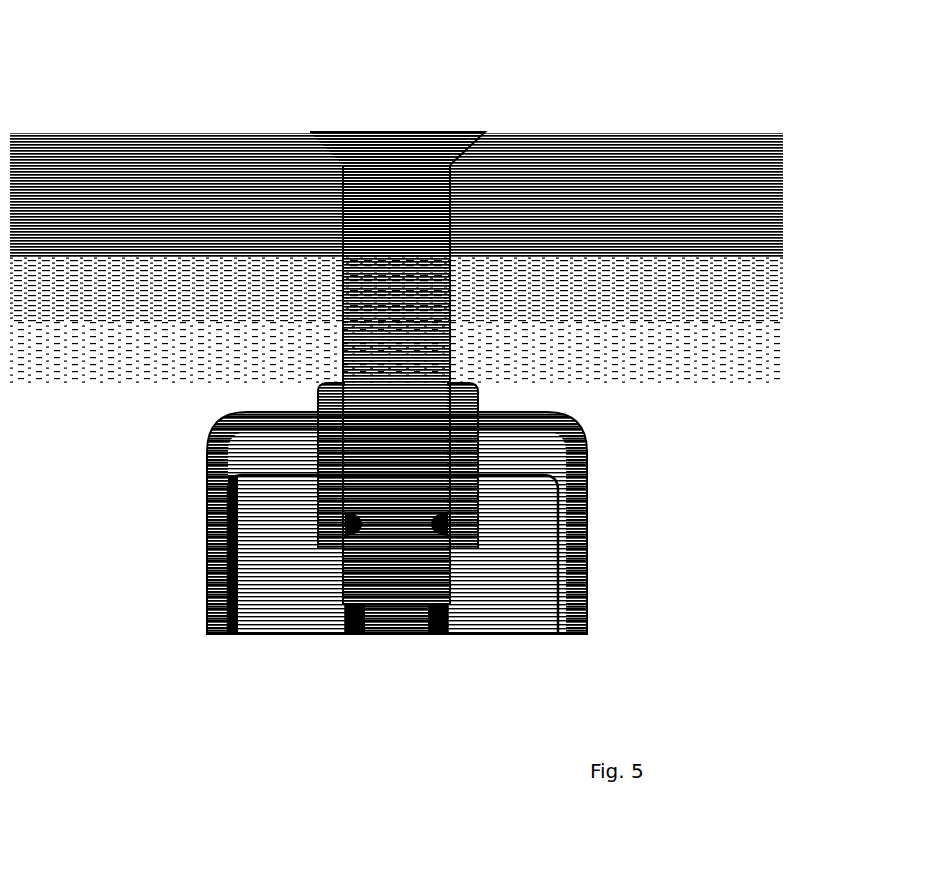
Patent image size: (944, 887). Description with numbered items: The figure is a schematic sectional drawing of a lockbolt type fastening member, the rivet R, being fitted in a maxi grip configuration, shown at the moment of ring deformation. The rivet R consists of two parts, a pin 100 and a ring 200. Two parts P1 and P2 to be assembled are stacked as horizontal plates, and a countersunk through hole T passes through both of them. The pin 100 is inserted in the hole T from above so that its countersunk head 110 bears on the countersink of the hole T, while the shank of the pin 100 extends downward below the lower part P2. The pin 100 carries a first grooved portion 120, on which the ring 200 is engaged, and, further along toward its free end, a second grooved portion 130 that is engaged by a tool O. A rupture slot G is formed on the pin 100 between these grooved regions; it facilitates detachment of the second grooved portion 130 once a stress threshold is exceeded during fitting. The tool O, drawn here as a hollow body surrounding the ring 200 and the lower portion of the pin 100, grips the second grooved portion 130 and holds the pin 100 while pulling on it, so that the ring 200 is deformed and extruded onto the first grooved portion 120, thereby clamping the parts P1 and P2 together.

The pin 100 is at (340, 388).
The countersunk head 110 is at (370, 137).
The first grooved portion 120 is at (378, 448).
The second grooved portion 130 is at (378, 557).
The ring 200 is at (452, 477).
The rivet R is at (358, 218).
The countersunk through hole T is at (449, 233).
The rupture slot G is at (372, 524).
The tool O is at (585, 618).
The first part P1 is at (675, 142).
The second part P2 is at (672, 370).